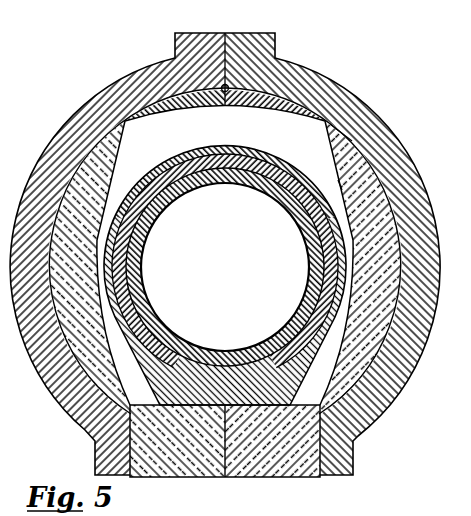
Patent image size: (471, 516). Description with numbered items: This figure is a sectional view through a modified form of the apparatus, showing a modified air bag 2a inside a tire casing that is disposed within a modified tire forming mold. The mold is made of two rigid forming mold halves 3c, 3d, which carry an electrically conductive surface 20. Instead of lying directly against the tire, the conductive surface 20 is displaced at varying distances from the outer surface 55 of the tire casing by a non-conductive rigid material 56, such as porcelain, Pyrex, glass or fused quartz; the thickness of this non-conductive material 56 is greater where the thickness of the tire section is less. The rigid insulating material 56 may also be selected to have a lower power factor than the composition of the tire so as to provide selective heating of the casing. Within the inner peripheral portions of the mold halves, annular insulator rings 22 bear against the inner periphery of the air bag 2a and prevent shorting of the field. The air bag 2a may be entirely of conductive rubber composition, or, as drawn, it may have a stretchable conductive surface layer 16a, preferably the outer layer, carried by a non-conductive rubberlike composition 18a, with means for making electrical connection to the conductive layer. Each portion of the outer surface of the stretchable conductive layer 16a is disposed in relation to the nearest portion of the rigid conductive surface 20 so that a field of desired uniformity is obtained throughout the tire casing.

The rigid forming mold half 3c is at (410, 160).
The rigid forming mold half 3d is at (62, 127).
The electrically conductive surface 20 is at (254, 109).
The annular insulator ring 22 is at (177, 476).
The non-conductive rigid material 56 is at (352, 141).
The outer surface of the tire casing 55 is at (338, 180).
The stretchable conductive surface layer 16a is at (188, 153).
The non-conductive rubberlike composition 18a is at (257, 186).
The air bag 2a is at (300, 233).